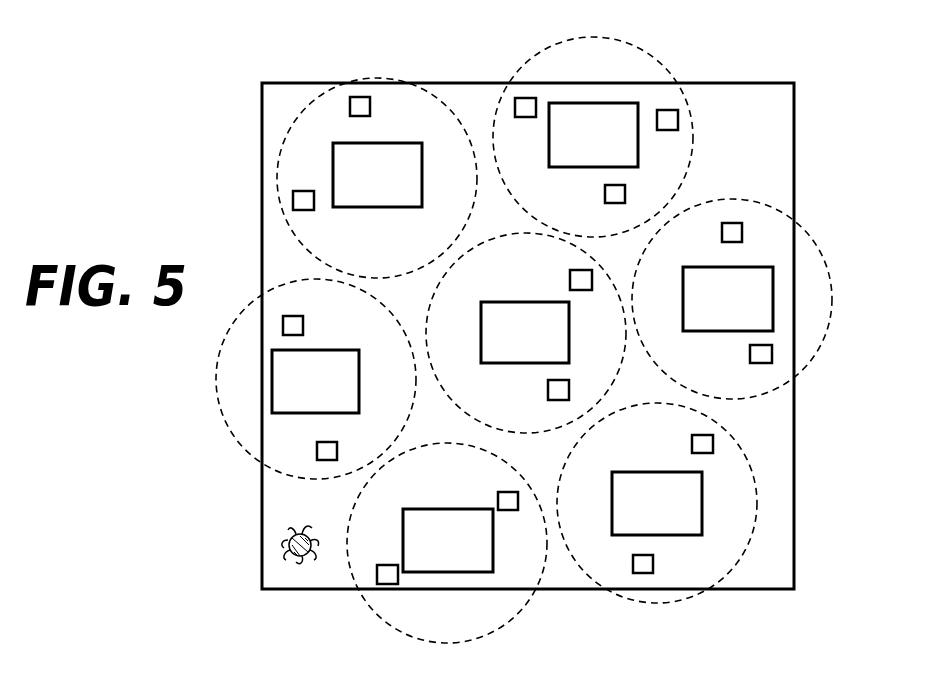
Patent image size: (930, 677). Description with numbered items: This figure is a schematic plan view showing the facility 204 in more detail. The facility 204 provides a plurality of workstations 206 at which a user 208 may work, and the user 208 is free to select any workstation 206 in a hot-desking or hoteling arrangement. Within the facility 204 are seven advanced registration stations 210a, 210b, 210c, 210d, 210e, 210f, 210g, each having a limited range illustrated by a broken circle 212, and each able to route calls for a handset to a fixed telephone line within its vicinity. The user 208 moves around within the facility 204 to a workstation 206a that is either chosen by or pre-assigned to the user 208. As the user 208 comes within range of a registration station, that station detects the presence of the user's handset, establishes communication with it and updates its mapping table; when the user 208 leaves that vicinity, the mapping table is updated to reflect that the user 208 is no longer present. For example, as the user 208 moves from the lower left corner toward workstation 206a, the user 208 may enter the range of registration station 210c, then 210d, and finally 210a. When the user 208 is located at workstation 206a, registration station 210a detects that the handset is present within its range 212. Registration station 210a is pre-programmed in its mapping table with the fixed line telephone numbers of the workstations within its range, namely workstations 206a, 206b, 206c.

The facility 204 is at (795, 572).
The workstation 206 is at (352, 97).
The workstation 206a is at (677, 118).
The workstation 206b is at (515, 106).
The workstation 206c is at (605, 194).
The user 208 is at (290, 533).
The advanced registration station 210a is at (593, 135).
The advanced registration station 210b is at (377, 175).
The advanced registration station 210c is at (315, 381).
The advanced registration station 210d is at (525, 332).
The advanced registration station 210e is at (728, 299).
The advanced registration station 210f is at (448, 540).
The advanced registration station 210g is at (657, 503).
The broken circle 212 is at (373, 77).